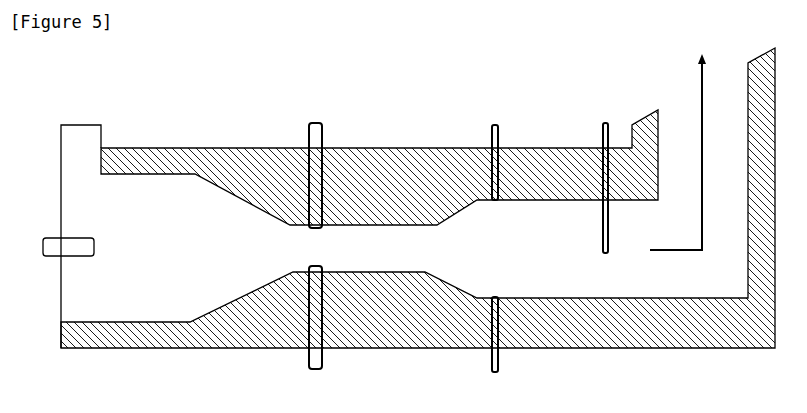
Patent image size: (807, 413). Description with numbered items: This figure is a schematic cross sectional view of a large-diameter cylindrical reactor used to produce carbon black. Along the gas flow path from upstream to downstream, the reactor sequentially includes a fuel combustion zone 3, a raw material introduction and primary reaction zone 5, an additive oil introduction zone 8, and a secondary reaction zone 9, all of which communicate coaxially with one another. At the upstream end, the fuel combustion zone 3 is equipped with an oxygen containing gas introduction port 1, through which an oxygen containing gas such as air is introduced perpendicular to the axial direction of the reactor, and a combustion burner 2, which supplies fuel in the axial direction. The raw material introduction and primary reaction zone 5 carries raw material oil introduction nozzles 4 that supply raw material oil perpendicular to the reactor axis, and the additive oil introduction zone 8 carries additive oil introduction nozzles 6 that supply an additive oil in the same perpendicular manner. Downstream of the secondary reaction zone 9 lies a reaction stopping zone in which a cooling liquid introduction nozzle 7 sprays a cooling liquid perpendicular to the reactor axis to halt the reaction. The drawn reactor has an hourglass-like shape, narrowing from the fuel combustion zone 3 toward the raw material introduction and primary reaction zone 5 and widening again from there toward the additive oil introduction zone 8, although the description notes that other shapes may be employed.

The oxygen containing gas introduction port 1 is at (77, 122).
The combustion burner 2 is at (55, 257).
The fuel combustion zone 3 is at (135, 250).
The raw material oil introduction nozzle 4 is at (323, 128).
The raw material introduction and primary reaction zone 5 is at (369, 250).
The additive oil introduction nozzle 6 is at (492, 127).
The cooling liquid introduction nozzle 7 is at (603, 127).
The additive oil introduction zone 8 is at (497, 250).
The secondary reaction zone 9 is at (563, 250).